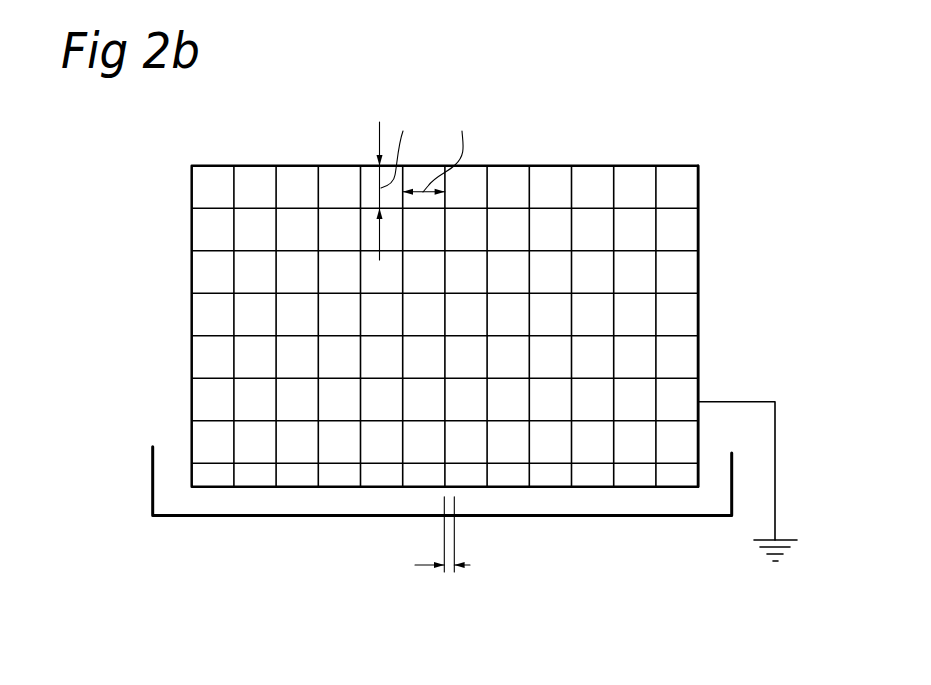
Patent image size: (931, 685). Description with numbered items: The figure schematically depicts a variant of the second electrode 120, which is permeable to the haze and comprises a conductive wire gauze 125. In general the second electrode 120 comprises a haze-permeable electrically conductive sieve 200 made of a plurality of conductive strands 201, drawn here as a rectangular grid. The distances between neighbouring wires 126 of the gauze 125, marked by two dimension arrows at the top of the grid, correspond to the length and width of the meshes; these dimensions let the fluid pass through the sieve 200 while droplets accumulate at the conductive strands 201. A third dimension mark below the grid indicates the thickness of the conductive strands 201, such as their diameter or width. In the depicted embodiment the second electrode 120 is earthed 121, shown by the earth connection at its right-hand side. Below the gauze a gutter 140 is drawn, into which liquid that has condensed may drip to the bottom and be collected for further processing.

The haze-permeable electrically conductive sieve 200 is at (693, 140).
The second electrode 120 is at (178, 357).
The conductive wire gauze 125 is at (551, 142).
The conductive strands 201 is at (253, 207).
The wires of the gauze 126 is at (712, 313).
The earth connection 121 is at (751, 392).
The gutter 140 is at (130, 499).